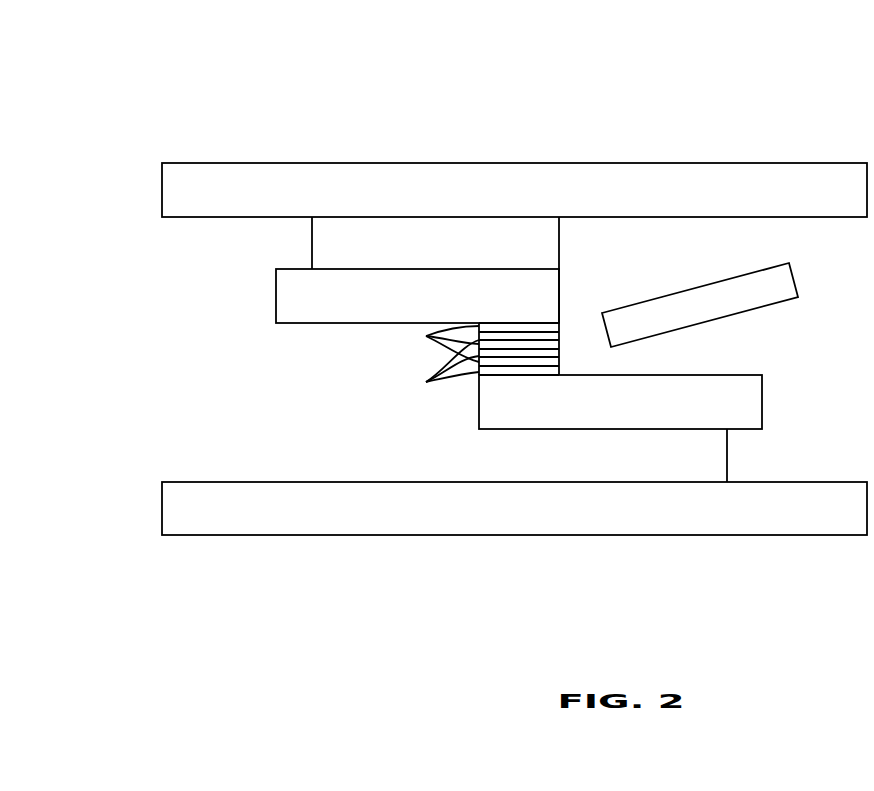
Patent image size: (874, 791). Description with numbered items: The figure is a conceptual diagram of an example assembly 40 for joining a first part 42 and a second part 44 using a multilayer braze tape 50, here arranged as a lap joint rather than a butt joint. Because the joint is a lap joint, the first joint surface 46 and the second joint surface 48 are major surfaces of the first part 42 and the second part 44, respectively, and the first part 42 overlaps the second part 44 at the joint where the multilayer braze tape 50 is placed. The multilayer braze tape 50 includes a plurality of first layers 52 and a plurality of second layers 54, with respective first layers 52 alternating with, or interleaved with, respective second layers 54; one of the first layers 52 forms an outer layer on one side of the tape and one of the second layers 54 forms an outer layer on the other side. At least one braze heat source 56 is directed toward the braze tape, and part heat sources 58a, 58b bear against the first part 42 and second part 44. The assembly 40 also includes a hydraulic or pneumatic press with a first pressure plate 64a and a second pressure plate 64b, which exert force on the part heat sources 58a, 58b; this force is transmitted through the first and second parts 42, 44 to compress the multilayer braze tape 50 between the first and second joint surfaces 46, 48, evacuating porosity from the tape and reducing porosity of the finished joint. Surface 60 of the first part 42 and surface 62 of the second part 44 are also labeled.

The assembly 40 is at (132, 64).
The first part 42 is at (293, 292).
The second part 44 is at (745, 400).
The first joint surface 46 is at (543, 322).
The second joint surface 48 is at (487, 377).
The multilayer braze tape 50 is at (572, 349).
The first layers 52 is at (436, 342).
The second layers 54 is at (436, 367).
The braze heat source 56 is at (783, 283).
The part heat source 58a is at (326, 239).
The part heat source 58b is at (717, 451).
The first surface 60 is at (378, 268).
The second surface 62 is at (665, 429).
The first pressure plate 64a is at (170, 185).
The second pressure plate 64b is at (180, 509).